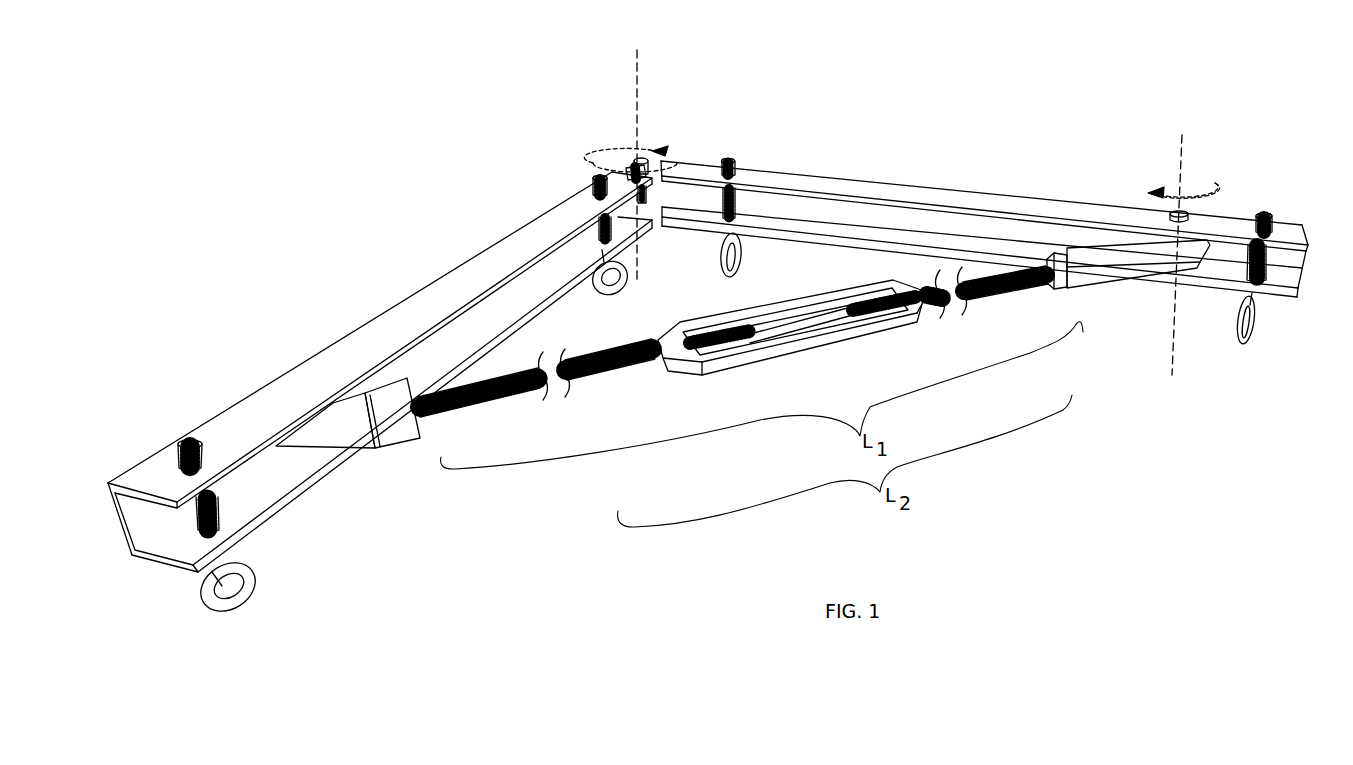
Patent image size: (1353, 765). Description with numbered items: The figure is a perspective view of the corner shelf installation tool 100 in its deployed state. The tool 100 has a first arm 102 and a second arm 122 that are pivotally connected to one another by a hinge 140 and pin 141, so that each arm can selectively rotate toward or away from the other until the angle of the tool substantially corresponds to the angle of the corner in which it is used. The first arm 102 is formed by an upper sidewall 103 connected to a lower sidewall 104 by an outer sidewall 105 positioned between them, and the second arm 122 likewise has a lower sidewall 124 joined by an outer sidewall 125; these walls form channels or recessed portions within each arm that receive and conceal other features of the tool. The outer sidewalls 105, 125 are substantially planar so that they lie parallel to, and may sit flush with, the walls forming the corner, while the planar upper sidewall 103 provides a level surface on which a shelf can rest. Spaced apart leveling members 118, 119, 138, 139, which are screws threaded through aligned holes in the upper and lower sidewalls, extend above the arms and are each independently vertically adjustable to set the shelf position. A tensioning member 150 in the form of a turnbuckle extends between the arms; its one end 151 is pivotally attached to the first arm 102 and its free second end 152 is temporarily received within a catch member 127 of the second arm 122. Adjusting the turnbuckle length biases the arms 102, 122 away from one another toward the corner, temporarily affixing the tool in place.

The corner shelf installation tool 100 is at (408, 181).
The first arm 102 is at (806, 162).
The upper sidewall 103 is at (915, 187).
The lower sidewall 104 is at (915, 242).
The outer sidewall 105 is at (1296, 268).
The leveling member 118 is at (1262, 215).
The leveling member 119 is at (728, 160).
The second arm 122 is at (407, 307).
The lower sidewall 124 is at (263, 490).
The outer sidewall 125 is at (152, 517).
The catch member 127 is at (360, 436).
The leveling member 138 is at (230, 605).
The leveling member 139 is at (597, 177).
The hinge 140 is at (640, 167).
The pin 141 is at (655, 160).
The tensioning member 150 is at (845, 336).
The first end of tensioning member 151 is at (1143, 252).
The second end of tensioning member 152 is at (415, 430).